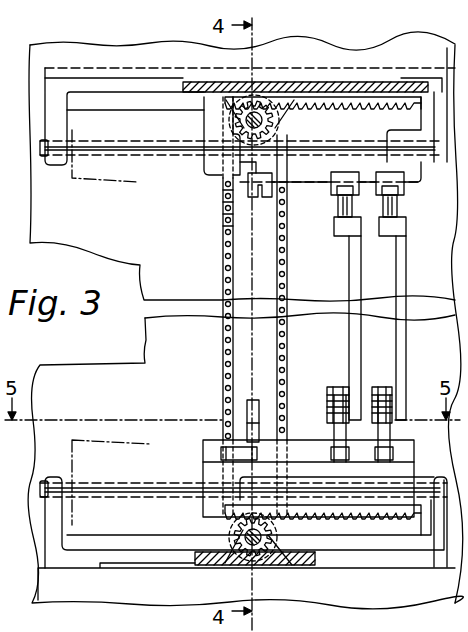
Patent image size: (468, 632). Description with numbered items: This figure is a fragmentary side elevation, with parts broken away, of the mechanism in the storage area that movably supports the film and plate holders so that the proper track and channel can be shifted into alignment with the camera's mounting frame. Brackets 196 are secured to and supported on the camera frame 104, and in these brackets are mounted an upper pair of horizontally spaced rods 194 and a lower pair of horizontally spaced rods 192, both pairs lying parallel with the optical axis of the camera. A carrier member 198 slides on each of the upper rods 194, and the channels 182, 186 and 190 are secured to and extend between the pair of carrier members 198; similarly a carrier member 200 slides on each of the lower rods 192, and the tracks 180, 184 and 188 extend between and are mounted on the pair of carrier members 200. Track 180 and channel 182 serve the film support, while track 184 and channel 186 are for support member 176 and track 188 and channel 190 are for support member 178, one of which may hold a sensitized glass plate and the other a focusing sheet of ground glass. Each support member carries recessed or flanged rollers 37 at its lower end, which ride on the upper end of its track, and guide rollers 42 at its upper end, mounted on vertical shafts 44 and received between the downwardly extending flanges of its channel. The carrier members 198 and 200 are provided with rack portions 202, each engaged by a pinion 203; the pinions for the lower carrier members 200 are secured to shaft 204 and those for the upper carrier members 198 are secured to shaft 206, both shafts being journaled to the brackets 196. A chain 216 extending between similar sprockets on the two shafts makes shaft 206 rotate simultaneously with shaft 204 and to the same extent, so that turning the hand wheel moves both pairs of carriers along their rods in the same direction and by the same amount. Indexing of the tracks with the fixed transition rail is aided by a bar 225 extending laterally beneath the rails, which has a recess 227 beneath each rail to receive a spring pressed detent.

The camera frame 104 is at (157, 58).
The brackets 196 is at (325, 80).
The upper pair of horizontally spaced rods 194 is at (112, 148).
The lower pair of horizontally spaced rods 192 is at (118, 487).
The rack portions 202 is at (334, 100).
The pinion 203 is at (272, 123).
The shaft 204 is at (249, 548).
The shaft 206 is at (228, 118).
The carrier members 198 is at (202, 163).
The chain 216 is at (223, 257).
The channel 182 is at (223, 200).
The track 180 is at (252, 430).
The bar 225 is at (267, 450).
The channel 186 is at (333, 190).
The channel 190 is at (405, 200).
The rollers 42 is at (340, 207).
The vertical shafts 44 is at (338, 222).
The support member 176 is at (350, 338).
The support member 178 is at (407, 336).
The rollers 37 is at (343, 386).
The track 184 is at (336, 432).
The track 188 is at (392, 436).
The carrier members 200 is at (203, 450).
The recess 227 is at (222, 452).